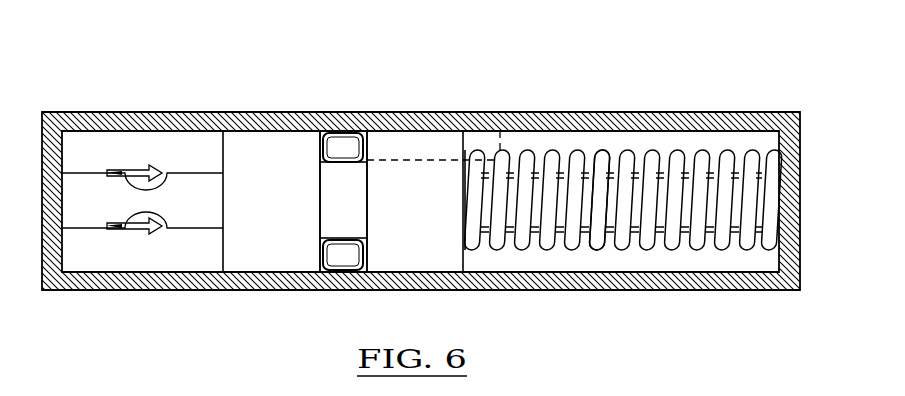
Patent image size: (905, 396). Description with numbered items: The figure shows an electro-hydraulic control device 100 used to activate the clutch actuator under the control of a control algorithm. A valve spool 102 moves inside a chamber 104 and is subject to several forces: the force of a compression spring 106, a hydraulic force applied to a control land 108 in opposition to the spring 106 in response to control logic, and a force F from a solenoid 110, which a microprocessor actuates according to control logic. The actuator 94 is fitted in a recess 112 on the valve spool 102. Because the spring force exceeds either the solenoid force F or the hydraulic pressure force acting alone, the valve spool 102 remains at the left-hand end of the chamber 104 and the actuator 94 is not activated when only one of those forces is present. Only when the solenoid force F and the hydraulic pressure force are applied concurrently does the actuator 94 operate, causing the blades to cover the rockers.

The electro-hydraulic control device 100 is at (411, 70).
The actuator 94 is at (347, 152).
The valve spool 102 is at (590, 170).
The compression spring 106 is at (601, 152).
The chamber 104 is at (322, 260).
The control land 108 is at (218, 247).
The solenoid 110 is at (146, 215).
The recess 112 is at (358, 242).